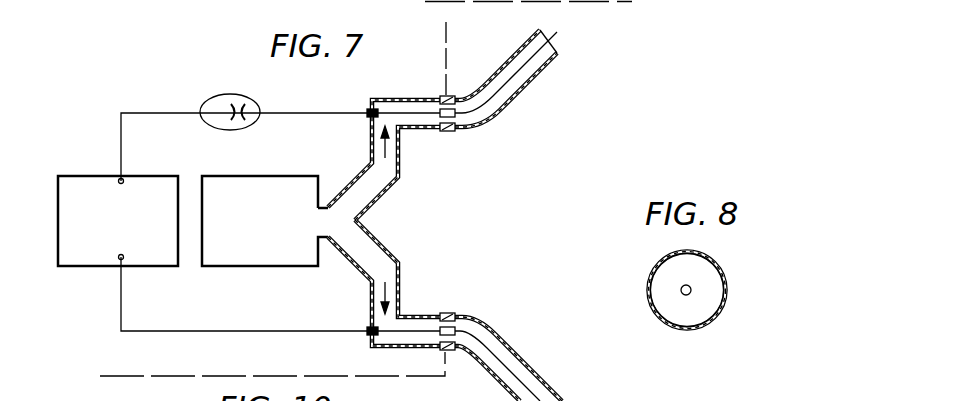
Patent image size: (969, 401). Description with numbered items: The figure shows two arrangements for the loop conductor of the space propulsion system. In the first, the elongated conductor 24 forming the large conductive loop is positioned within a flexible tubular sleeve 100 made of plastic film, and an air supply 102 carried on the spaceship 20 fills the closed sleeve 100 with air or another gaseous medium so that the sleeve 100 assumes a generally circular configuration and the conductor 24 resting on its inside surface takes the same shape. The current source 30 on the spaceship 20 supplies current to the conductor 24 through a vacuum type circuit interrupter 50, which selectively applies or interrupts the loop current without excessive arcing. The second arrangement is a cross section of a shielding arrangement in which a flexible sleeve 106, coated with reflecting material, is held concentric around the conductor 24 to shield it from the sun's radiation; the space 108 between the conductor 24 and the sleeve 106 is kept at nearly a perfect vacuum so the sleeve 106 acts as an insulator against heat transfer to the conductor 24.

In FIG. 7, the spaceship 20 is at (446, 63).
In FIG. 7, the conductor 24 is at (505, 86).
In FIG. 8, the conductor 24 is at (692, 291).
In FIG. 7, the current source 30 is at (97, 185).
In FIG. 7, the vacuum type circuit interrupter 50 is at (256, 105).
In FIG. 7, the flexible tubular sleeve 100 is at (544, 69).
In FIG. 7, the air supply 102 is at (253, 185).
In FIG. 8, the flexible sleeve 106 is at (713, 263).
In FIG. 8, the space 108 is at (705, 308).